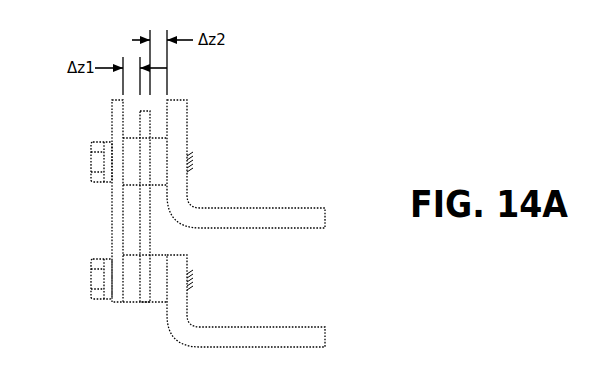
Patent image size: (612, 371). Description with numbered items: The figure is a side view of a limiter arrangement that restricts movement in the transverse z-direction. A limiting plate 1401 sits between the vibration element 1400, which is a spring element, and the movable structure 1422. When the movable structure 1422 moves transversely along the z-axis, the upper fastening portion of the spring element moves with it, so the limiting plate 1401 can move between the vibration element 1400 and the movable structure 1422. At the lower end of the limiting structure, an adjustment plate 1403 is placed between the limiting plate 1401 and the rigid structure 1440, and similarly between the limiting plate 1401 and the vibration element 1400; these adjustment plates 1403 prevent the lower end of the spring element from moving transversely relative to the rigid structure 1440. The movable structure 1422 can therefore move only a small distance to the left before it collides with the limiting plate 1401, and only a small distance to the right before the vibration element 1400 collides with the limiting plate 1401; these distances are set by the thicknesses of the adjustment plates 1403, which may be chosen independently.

The vibration element 1400 is at (118, 124).
The limiting plate 1401 is at (145, 228).
The adjustment plate 1403 is at (158, 272).
The movable structure 1422 is at (177, 128).
The rigid structure 1440 is at (258, 335).